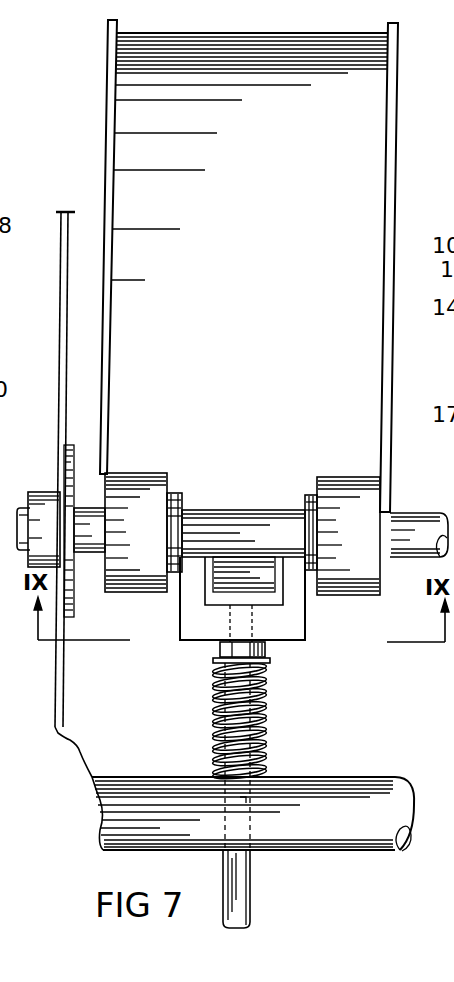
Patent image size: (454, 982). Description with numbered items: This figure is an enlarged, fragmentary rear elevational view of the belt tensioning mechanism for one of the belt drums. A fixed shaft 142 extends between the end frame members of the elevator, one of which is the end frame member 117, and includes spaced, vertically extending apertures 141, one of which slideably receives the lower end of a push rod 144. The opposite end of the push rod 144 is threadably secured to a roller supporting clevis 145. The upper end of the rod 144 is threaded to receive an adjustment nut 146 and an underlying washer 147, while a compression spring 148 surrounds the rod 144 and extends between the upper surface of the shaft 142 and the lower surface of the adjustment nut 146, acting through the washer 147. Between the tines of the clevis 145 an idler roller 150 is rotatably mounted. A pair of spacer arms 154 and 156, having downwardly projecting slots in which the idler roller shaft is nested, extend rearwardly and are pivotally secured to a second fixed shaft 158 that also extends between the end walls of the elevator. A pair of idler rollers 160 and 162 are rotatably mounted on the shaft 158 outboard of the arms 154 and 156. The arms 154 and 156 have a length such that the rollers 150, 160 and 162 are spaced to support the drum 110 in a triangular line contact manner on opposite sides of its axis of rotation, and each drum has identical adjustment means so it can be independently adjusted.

The drum 110 is at (392, 122).
The end frame member 117 is at (60, 343).
The idler roller 160 is at (148, 483).
The spacer arm 154 is at (180, 497).
The idler roller 150 is at (235, 563).
The spacer arm 156 is at (308, 500).
The idler roller 162 is at (340, 485).
The fixed shaft 158 is at (417, 520).
The roller supporting clevis 145 is at (290, 627).
The adjustment nut 146 is at (267, 653).
The washer 147 is at (217, 660).
The compression spring 148 is at (262, 720).
The aperture 141 is at (258, 804).
The fixed shaft 142 is at (365, 790).
The push rod 144 is at (240, 882).